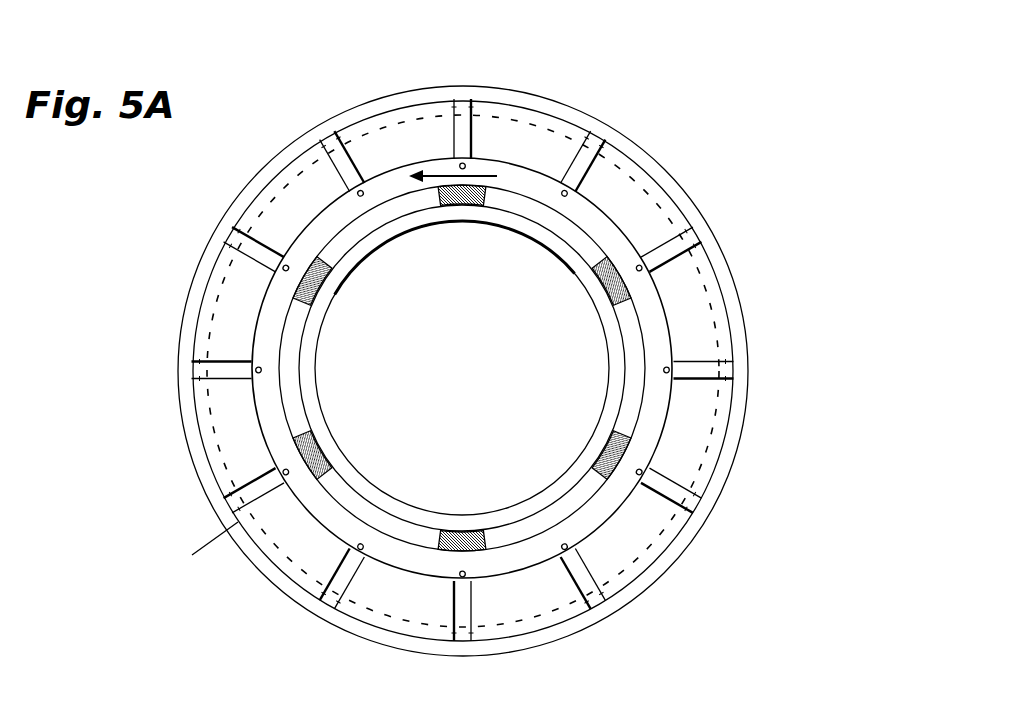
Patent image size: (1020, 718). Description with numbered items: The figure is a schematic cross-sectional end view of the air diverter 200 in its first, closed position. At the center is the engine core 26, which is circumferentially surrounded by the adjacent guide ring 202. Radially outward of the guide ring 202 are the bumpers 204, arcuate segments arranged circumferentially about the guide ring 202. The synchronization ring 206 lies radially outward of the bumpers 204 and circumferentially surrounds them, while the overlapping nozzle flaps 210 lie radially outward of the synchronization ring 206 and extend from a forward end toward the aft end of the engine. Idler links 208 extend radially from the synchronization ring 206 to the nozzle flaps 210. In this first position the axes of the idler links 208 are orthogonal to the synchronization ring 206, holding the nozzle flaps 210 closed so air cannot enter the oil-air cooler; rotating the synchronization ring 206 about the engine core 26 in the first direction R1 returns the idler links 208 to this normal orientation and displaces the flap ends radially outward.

The air diverter 200 is at (149, 345).
The nozzle flaps 210 is at (735, 302).
The idler links 208 is at (682, 262).
The synchronization ring 206 is at (537, 184).
The guide ring 202 is at (560, 496).
The engine core 26 is at (462, 368).
The bumpers 204 is at (604, 446).
The first direction R1 is at (442, 173).